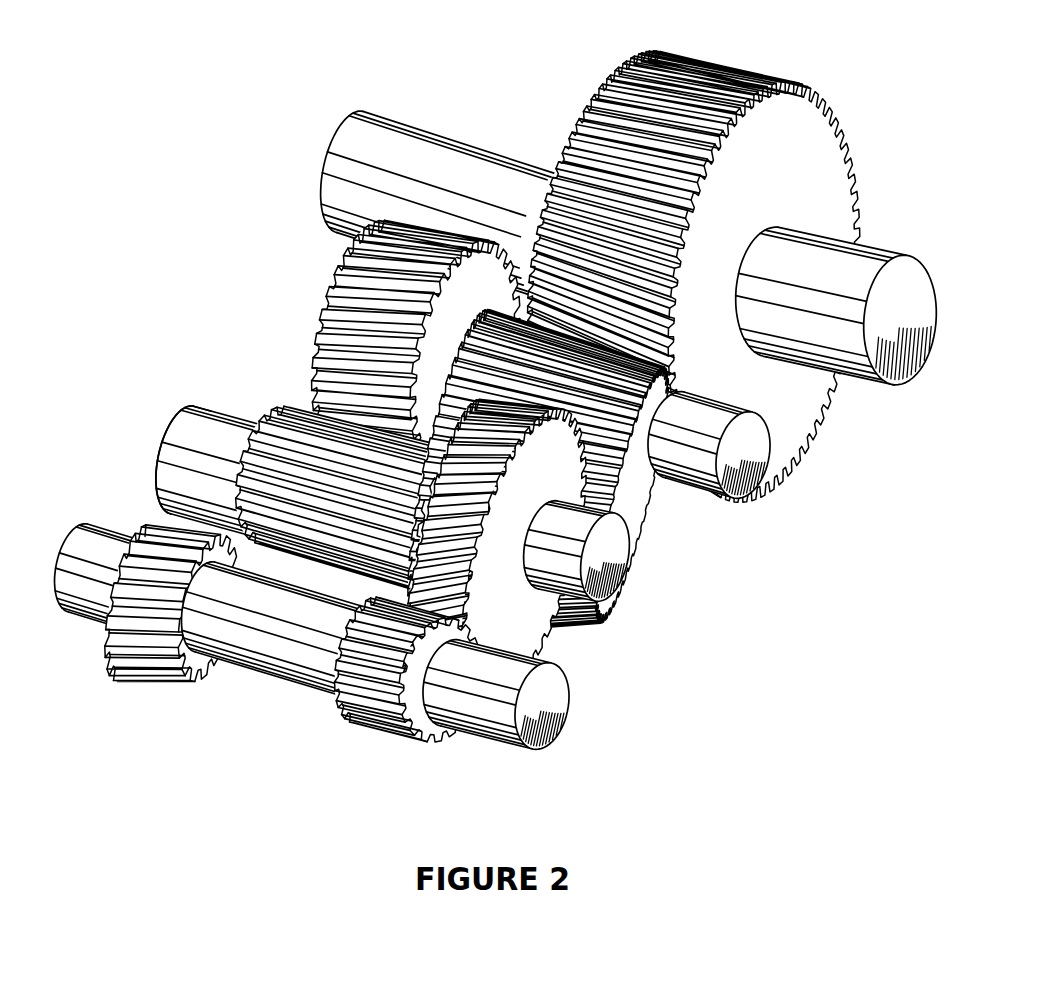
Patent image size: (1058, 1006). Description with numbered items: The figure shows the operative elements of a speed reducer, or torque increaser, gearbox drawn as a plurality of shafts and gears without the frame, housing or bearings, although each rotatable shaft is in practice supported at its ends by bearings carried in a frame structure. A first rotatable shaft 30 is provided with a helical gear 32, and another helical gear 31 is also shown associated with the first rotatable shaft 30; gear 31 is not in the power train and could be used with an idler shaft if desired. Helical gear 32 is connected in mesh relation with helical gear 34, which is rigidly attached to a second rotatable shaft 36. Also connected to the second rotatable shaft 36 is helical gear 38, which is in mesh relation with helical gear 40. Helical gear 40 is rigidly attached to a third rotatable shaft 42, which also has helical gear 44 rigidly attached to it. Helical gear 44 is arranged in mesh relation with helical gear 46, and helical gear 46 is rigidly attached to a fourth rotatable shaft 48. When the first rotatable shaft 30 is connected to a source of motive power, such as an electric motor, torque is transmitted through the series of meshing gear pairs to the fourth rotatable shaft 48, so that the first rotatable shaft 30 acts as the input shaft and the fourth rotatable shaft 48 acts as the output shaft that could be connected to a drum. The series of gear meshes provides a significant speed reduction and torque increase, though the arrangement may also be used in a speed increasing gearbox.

The first rotatable shaft 30 is at (73, 603).
The helical gear 31 is at (160, 660).
The helical gear 32 is at (383, 717).
The helical gear 34 is at (547, 620).
The second rotatable shaft 36 is at (602, 590).
The helical gear 38 is at (287, 540).
The helical gear 40 is at (478, 268).
The third rotatable shaft 42 is at (740, 487).
The helical gear 44 is at (660, 485).
The helical gear 46 is at (803, 403).
The fourth rotatable shaft 48 is at (907, 273).